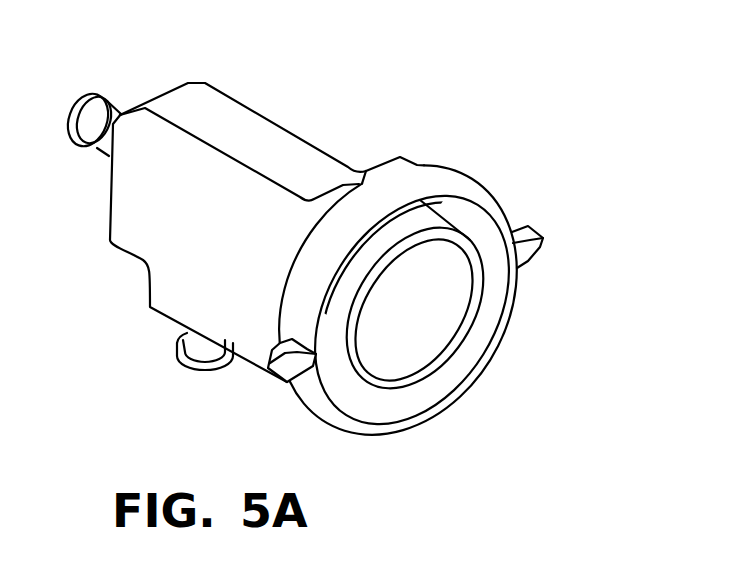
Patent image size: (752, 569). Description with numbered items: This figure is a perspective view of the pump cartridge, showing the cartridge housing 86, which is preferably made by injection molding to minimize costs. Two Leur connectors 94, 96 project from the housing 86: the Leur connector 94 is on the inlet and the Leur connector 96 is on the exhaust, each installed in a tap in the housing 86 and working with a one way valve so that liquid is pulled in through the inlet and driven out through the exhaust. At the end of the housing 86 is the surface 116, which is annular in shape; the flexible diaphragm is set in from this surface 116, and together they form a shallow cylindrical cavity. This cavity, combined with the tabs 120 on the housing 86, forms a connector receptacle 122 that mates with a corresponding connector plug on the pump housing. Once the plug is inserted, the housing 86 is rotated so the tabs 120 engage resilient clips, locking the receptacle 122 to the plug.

The cartridge housing 86 is at (222, 115).
The Leur connector 94 is at (79, 100).
The Leur connector 96 is at (175, 368).
The surface 116 is at (489, 192).
The tabs 120 is at (543, 238).
The connector receptacle 122 is at (480, 377).